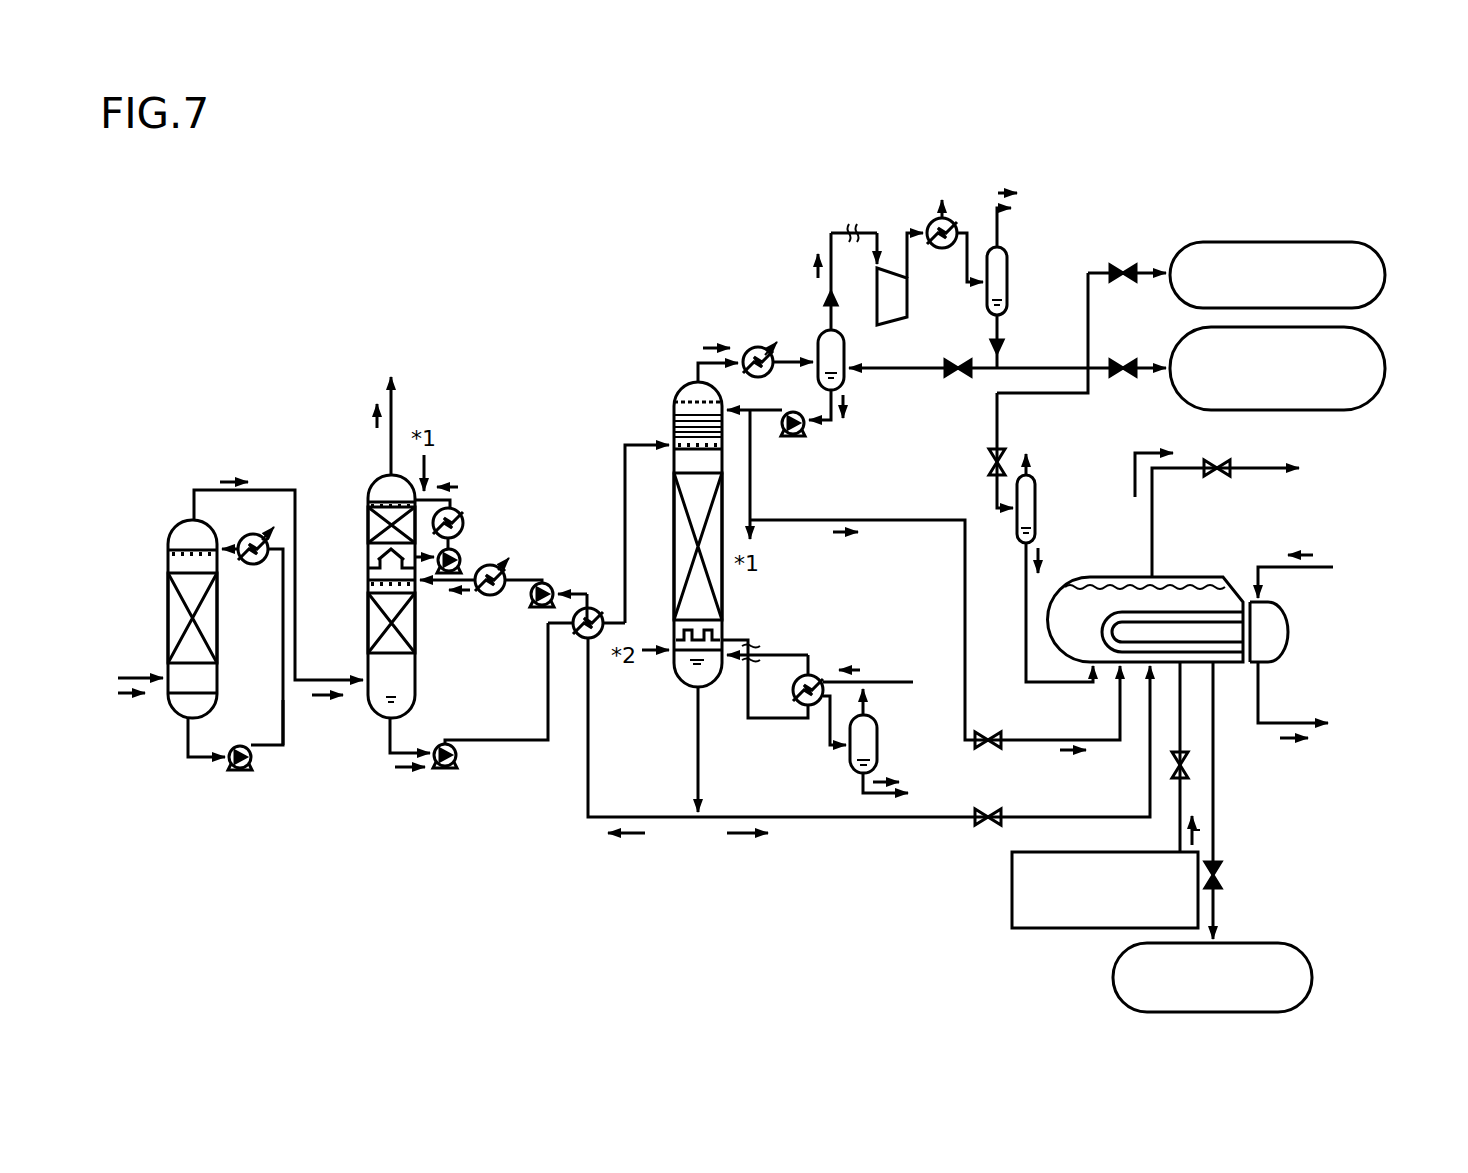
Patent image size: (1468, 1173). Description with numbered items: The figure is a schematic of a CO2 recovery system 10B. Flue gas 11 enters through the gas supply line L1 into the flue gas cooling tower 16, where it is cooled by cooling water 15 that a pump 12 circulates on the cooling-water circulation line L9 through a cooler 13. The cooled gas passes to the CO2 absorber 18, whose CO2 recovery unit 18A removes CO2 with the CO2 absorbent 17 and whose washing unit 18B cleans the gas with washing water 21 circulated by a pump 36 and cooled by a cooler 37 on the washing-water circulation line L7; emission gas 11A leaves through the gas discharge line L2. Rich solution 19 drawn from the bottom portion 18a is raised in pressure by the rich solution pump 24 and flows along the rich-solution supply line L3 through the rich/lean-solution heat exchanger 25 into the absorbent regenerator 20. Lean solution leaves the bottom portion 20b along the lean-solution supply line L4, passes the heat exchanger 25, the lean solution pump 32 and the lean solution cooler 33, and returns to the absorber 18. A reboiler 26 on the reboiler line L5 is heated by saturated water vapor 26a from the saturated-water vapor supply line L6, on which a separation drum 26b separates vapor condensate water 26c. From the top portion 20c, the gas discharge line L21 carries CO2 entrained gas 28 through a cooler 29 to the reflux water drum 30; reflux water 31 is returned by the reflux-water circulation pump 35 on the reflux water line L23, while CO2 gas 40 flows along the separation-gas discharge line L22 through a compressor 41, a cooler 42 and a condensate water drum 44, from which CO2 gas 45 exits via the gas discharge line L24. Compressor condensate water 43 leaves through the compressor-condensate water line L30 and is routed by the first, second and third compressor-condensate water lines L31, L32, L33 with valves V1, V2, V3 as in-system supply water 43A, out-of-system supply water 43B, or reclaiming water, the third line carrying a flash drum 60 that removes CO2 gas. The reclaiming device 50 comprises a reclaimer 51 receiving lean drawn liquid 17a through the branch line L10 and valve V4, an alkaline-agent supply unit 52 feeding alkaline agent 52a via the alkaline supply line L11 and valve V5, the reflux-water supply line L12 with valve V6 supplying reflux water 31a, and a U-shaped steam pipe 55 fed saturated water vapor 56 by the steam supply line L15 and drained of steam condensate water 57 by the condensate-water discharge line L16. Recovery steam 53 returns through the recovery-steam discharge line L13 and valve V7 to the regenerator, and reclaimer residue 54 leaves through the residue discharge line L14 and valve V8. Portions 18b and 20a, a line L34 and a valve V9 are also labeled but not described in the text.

The CO2 recovery system 10B is at (724, 152).
The flue gas 11 is at (130, 700).
The emission gas 11A is at (377, 418).
The pump 12 is at (240, 746).
The cooler 13 is at (263, 576).
The cooling water 15 is at (236, 562).
The flue gas cooling tower 16 is at (170, 527).
The CO2 absorbent 17 is at (462, 598).
The lean drawn liquid 17a is at (740, 840).
The CO2 absorber 18 is at (368, 560).
The bottom portion 18a is at (382, 725).
The absorber top 18b is at (366, 488).
The CO2 recovery unit 18A is at (367, 605).
The washing unit 18B is at (366, 530).
The rich solution 19 is at (415, 775).
The absorbent regenerator 20 is at (659, 513).
The regenerator top section 20a is at (672, 432).
The bottom portion 20b is at (680, 690).
The top portion 20c is at (672, 397).
The washing water 21 is at (441, 480).
The rich solution pump 24 is at (463, 770).
The rich/lean-solution heat exchanger 25 is at (580, 640).
The reboiler 26 is at (815, 675).
The saturated water vapor 26a is at (857, 668).
The separation drum 26b is at (878, 726).
The vapor condensate water 26c is at (905, 778).
The CO2 entrained gas 28 is at (714, 346).
The cooler 29 is at (757, 346).
The reflux water drum 30 is at (846, 356).
The reflux water 31 is at (846, 405).
The reflux water 31a is at (843, 540).
The lean solution pump 32 is at (548, 585).
The lean solution cooler 33 is at (495, 597).
The reflux-water circulation pump 35 is at (812, 440).
The pump 36 is at (462, 555).
The cooler 37 is at (462, 518).
The CO2 gas 40 is at (812, 263).
The compressor 41 is at (908, 300).
The cooler 42 is at (930, 226).
The compressor condensate water 43 is at (1008, 342).
The in-system supply water 43A is at (1386, 371).
The out-of-system supply water 43B is at (1386, 278).
The condensate water drum 44 is at (1008, 272).
The CO2 gas 45 is at (999, 192).
The reclaiming device 50 is at (1168, 610).
The reclaimer 51 is at (1121, 577).
The alkaline-agent supply unit 52 is at (1050, 929).
The alkaline agent 52a is at (1200, 830).
The recovery steam 53 is at (1146, 450).
The reclaimer residue 54 is at (1313, 979).
The steam pipe 55 is at (1231, 653).
The saturated water vapor 56 is at (1312, 549).
The steam condensate water 57 is at (1310, 742).
The flash drum 60 is at (1036, 512).
The gas supply line L1 is at (275, 490).
The gas discharge line L2 is at (378, 390).
The rich-solution supply line L3 is at (622, 440).
The lean-solution supply line L4 is at (673, 822).
The reboiler line L5 is at (748, 640).
The saturated-water vapor supply line L6 is at (900, 680).
The washing-water circulation line L7 is at (452, 490).
The cooling-water circulation line L9 is at (270, 750).
The branch line L10 is at (845, 822).
The alkaline supply line L11 is at (1183, 792).
The reflux-water supply line L12 is at (1061, 740).
The recovery-steam discharge line L13 is at (1272, 466).
The residue discharge line L14 is at (1220, 912).
The steam supply line L15 is at (1268, 566).
The condensate-water discharge line L16 is at (1262, 700).
The gas discharge line L21 is at (698, 355).
The separation-gas discharge line L22 is at (816, 233).
The reflux water line L23 is at (780, 432).
The gas discharge line L24 is at (1020, 212).
The compressor-condensate water line L30 is at (996, 348).
The first compressor-condensate water line L31 is at (1152, 364).
The second compressor-condensate water line L32 is at (1152, 270).
The third compressor-condensate water line L33 is at (999, 432).
The condensed water return line L34 is at (940, 380).
The first on-off valve V1 is at (1122, 359).
The second on-off valve V2 is at (1122, 264).
The third on-off valve V3 is at (993, 468).
The fourth on-off valve V4 is at (986, 828).
The fifth on-off valve V5 is at (1196, 765).
The sixth on-off valve V6 is at (986, 750).
The seventh on-off valve V7 is at (1216, 460).
The eighth on-off valve V8 is at (1224, 878).
The valve V9 is at (962, 380).